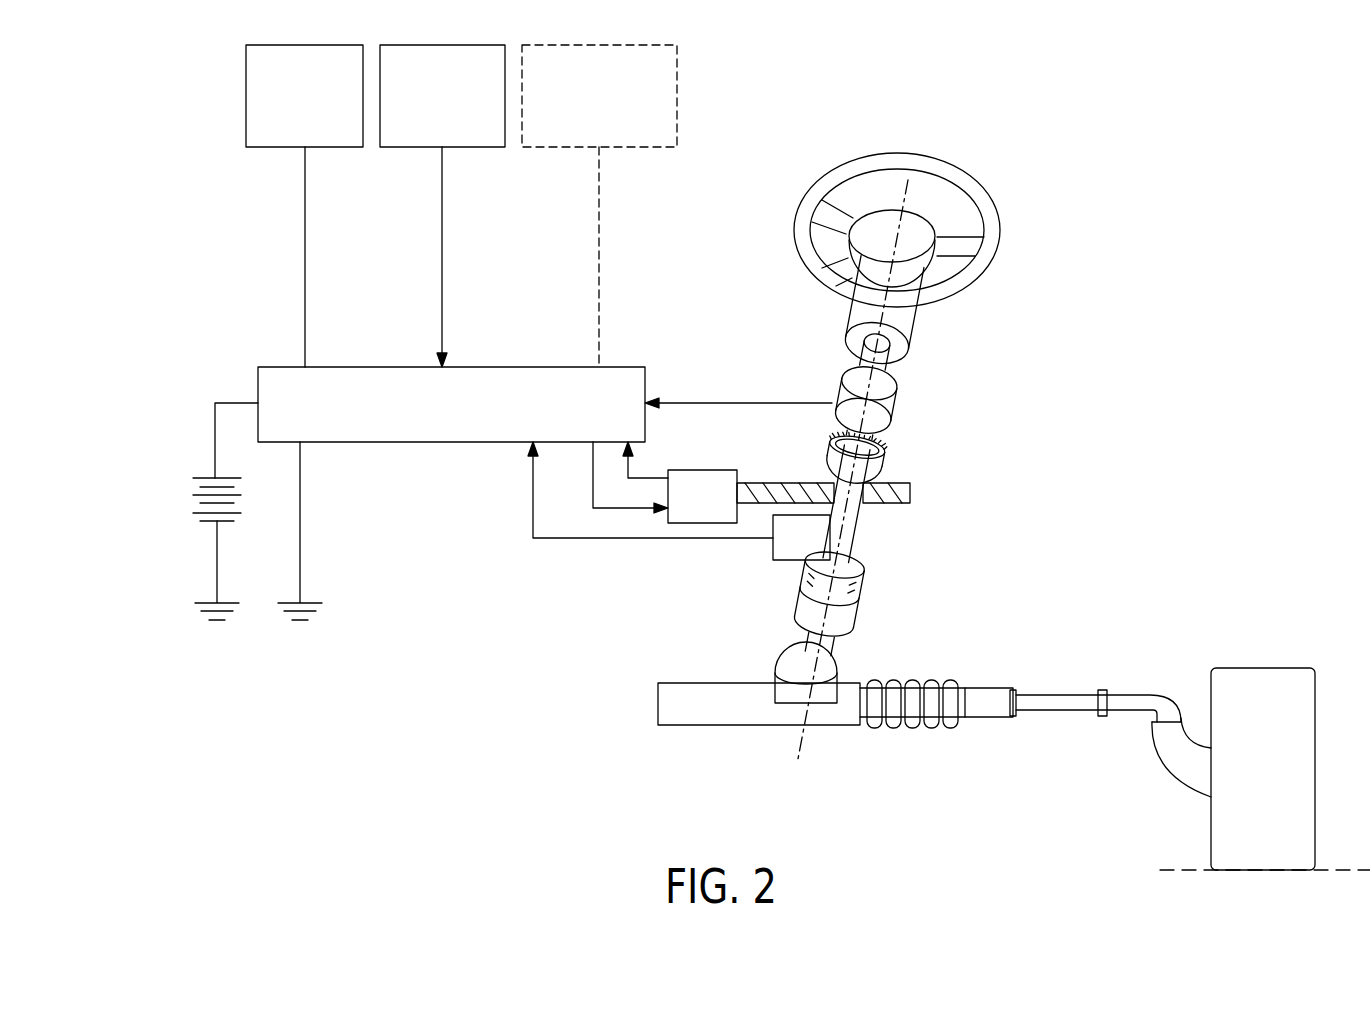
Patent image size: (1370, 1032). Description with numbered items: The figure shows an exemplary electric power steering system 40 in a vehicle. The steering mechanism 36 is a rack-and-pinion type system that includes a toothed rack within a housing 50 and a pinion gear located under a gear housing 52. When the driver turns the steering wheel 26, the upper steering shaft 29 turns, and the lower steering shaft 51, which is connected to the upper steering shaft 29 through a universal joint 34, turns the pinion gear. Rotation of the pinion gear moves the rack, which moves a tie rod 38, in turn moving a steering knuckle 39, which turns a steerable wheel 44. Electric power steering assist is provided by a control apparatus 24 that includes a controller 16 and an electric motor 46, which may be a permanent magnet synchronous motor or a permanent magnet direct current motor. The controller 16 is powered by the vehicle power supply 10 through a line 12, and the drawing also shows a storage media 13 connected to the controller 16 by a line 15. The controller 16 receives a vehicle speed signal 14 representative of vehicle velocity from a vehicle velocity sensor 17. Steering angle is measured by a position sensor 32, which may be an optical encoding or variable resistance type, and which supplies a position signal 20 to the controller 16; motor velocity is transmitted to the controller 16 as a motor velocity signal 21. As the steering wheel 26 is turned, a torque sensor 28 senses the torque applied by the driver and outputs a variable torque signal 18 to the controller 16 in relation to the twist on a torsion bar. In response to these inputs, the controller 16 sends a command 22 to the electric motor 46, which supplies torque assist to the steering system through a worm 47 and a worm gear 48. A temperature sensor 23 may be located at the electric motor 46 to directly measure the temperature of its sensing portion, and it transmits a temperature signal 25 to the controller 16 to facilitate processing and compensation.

The vehicle power supply 10 is at (200, 495).
The line 12 is at (232, 403).
The storage media 13 is at (268, 147).
The vehicle speed signal 14 is at (442, 278).
The storage media connection 15 is at (305, 278).
The controller 16 is at (437, 442).
The vehicle velocity sensor 17 is at (392, 147).
The torque signal 18 is at (755, 403).
The position signal 20 is at (655, 538).
The motor velocity signal 21 is at (622, 468).
The command 22 is at (612, 510).
The temperature sensor 23 is at (568, 147).
The control apparatus 24 is at (1085, 385).
The temperature signal 25 is at (599, 280).
The steering wheel 26 is at (948, 185).
The torque sensor 28 is at (885, 400).
The upper steering shaft 29 is at (895, 345).
The position sensor 32 is at (773, 548).
The universal joint 34 is at (855, 590).
The steering mechanism 36 is at (935, 668).
The tie rod 38 is at (1052, 703).
The steering knuckle 39 is at (1178, 757).
The electric power steering system 40 is at (1167, 487).
The steerable wheel 44 is at (1248, 683).
The electric motor 46 is at (713, 470).
The worm 47 is at (900, 495).
The worm gear 48 is at (865, 455).
The housing 50 is at (697, 712).
The lower steering shaft 51 is at (822, 640).
The gear housing 52 is at (790, 665).